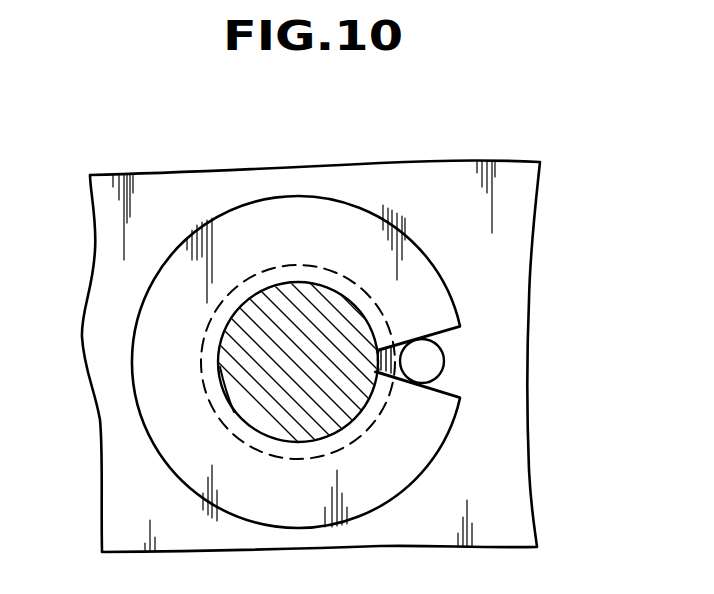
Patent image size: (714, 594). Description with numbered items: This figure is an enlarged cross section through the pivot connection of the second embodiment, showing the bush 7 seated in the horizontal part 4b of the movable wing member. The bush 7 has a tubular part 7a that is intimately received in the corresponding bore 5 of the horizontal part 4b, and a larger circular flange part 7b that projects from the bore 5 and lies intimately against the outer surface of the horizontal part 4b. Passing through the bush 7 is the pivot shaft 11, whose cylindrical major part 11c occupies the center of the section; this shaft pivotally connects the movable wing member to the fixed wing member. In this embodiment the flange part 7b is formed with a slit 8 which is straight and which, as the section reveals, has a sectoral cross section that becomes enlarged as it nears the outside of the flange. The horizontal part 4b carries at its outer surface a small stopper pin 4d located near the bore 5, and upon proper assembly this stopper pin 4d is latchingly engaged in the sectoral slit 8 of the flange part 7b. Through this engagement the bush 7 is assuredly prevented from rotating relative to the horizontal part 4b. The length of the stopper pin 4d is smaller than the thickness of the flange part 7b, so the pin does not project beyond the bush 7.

The horizontal part 4b is at (513, 238).
The stopper pin 4d is at (428, 367).
The bore 5 is at (380, 402).
The bush 7 is at (375, 212).
The tubular part 7a is at (275, 263).
The larger circular flange part 7b is at (295, 205).
The slit 8 is at (450, 334).
The pivot shaft 11 is at (237, 380).
The cylindrical major part 11c is at (235, 412).